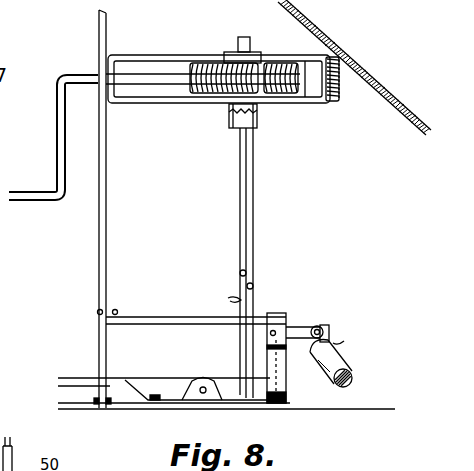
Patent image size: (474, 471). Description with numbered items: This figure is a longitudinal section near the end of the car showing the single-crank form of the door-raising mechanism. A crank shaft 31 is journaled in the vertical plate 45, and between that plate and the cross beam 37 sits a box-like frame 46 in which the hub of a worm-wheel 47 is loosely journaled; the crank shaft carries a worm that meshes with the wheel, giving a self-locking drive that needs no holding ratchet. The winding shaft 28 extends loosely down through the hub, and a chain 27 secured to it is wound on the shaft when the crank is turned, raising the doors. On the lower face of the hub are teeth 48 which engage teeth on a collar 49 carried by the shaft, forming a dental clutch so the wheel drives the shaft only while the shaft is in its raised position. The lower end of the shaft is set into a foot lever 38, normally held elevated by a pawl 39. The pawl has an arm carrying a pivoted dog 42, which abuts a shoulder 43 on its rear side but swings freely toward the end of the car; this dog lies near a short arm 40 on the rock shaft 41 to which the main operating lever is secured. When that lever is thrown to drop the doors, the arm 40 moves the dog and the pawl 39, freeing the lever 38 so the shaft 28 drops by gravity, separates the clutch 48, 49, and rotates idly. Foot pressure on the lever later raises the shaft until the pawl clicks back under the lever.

The chain 27 is at (229, 299).
The winding shaft 28 is at (256, 185).
The crank shaft 31 is at (157, 78).
The cross beam 37 is at (334, 101).
The foot lever 38 is at (171, 388).
The pawl 39 is at (300, 330).
The short arm 40 is at (326, 353).
The rock shaft 41 is at (353, 378).
The dog 42 is at (346, 341).
The shoulder 43 is at (328, 327).
The vertical plate 45 is at (107, 205).
The box-like frame 46 is at (204, 60).
The worm-wheel 47 is at (273, 74).
The teeth 48 is at (260, 108).
The collar 49 is at (228, 118).